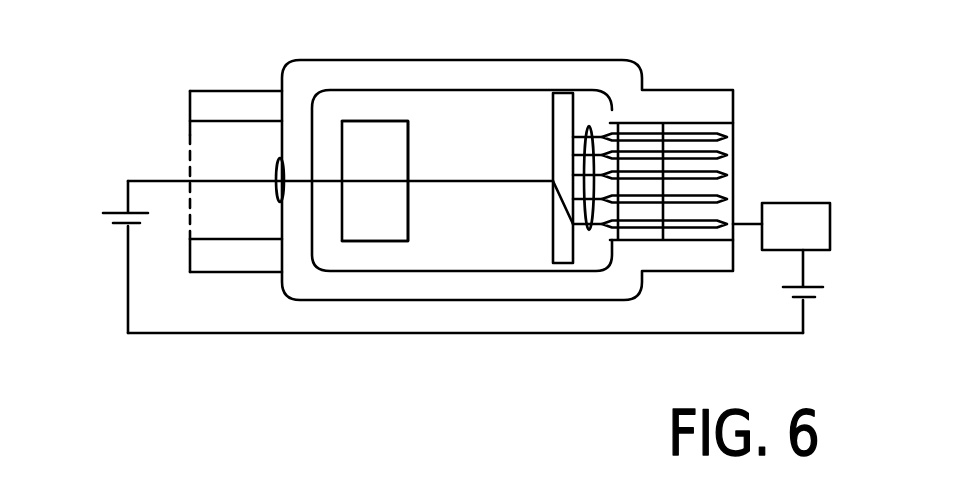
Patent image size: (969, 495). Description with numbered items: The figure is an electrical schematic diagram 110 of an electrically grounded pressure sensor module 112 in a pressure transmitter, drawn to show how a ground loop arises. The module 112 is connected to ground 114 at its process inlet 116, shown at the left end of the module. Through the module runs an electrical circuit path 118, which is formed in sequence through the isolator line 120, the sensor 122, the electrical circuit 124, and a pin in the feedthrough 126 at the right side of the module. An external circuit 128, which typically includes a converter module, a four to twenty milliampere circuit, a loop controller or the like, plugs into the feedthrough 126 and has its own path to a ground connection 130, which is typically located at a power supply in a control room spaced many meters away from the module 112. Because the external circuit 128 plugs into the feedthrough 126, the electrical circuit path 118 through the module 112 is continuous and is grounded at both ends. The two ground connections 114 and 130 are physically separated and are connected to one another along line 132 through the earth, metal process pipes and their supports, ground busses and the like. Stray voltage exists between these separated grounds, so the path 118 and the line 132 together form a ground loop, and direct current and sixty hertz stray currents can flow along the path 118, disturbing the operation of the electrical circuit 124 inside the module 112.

The electrical schematic diagram 110 is at (720, 56).
The pressure sensor module 112 is at (433, 60).
The ground 114 is at (118, 228).
The process inlet 116 is at (217, 146).
The electrical circuit path 118 is at (481, 178).
The isolator line 120 is at (327, 182).
The sensor 122 is at (393, 243).
The electrical circuit 124 is at (565, 247).
The feedthrough 126 is at (742, 151).
The external circuit 128 is at (815, 210).
The ground connection 130 is at (812, 300).
The line 132 is at (658, 336).